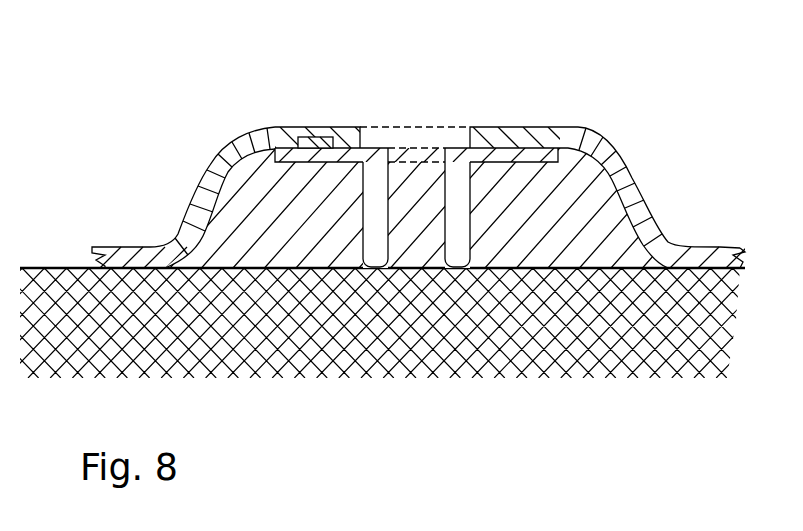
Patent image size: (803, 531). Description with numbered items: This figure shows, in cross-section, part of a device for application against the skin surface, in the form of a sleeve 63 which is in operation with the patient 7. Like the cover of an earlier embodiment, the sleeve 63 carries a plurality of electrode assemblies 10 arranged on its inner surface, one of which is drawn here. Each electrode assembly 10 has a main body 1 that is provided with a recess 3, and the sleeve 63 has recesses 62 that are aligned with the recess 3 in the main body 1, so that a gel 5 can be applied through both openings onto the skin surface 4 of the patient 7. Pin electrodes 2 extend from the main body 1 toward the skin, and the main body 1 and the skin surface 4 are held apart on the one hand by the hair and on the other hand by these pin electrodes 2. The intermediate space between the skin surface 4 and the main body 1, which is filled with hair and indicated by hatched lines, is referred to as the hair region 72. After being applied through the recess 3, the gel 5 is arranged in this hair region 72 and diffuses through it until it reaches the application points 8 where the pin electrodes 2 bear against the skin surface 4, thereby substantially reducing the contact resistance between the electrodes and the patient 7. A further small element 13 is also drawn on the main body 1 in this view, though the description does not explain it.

The main body 1 is at (338, 158).
The pin electrodes 2 is at (377, 230).
The recess 3 is at (411, 157).
The skin surface 4 is at (585, 258).
The gel 5 is at (574, 187).
The patient 7 is at (637, 330).
The application points 8 is at (377, 270).
The electrode assembly 10 is at (439, 107).
The insert 13 is at (323, 137).
The recess 62 is at (452, 138).
The sleeve 63 is at (237, 148).
The hair region 72 is at (267, 195).